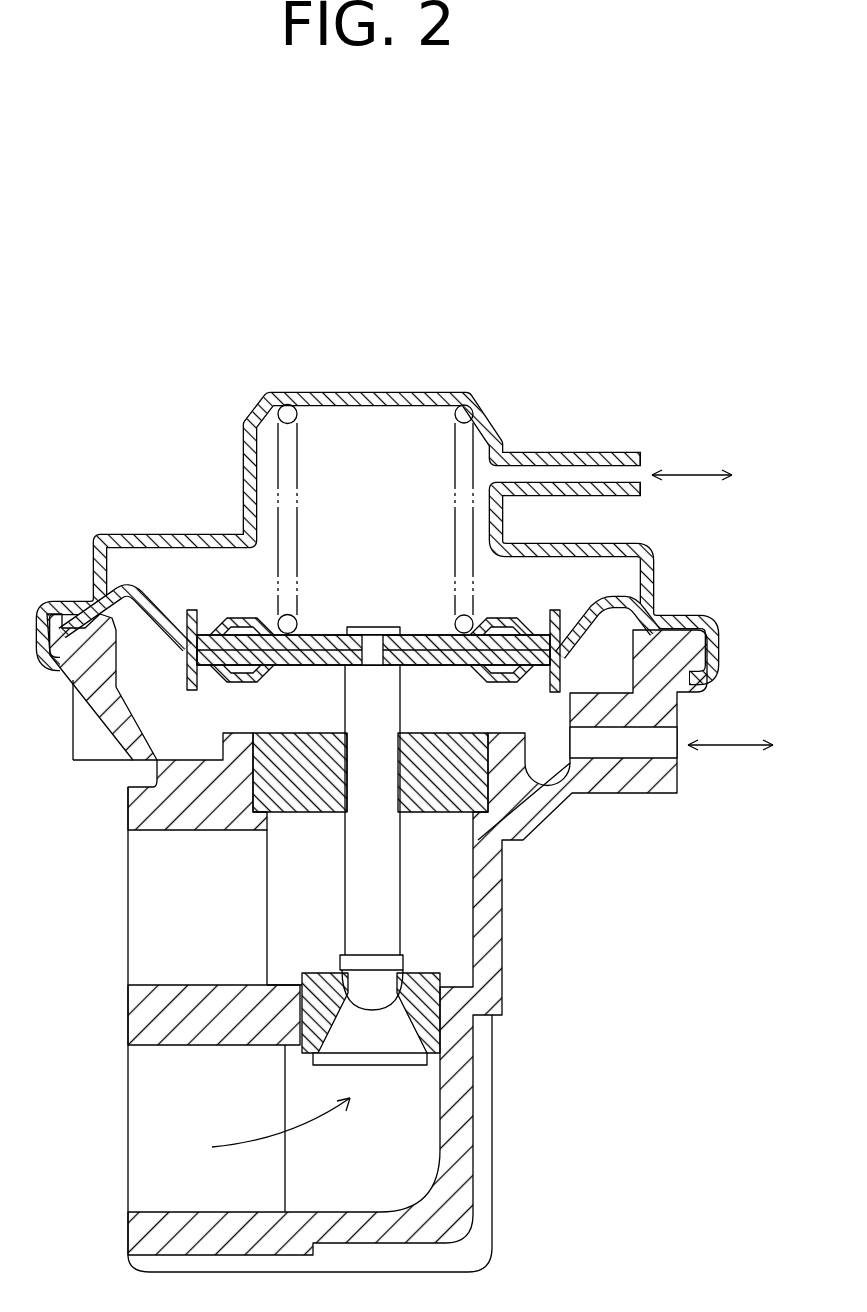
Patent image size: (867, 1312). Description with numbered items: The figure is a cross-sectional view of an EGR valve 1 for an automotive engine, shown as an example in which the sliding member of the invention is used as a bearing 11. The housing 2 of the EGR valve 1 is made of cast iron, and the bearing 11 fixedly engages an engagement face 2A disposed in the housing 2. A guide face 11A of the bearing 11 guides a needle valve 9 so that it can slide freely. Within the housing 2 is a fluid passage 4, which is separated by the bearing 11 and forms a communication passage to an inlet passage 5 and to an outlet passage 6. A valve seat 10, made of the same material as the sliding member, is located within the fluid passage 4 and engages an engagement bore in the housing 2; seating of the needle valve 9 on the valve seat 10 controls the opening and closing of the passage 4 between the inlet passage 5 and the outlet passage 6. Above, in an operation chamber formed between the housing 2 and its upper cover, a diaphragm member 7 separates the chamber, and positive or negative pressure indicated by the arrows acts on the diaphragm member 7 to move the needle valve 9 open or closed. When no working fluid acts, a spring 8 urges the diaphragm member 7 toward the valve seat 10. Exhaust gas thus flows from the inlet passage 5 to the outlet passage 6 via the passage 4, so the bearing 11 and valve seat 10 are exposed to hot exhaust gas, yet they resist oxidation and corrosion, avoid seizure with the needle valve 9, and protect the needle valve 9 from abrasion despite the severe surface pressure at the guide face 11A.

The EGR valve 1 is at (570, 397).
The housing 2 is at (490, 926).
The engagement face 2A is at (478, 776).
The fluid passage 4 is at (452, 957).
The inlet passage 5 is at (173, 1210).
The outlet passage 6 is at (173, 985).
The diaphragm member 7 is at (638, 557).
The spring 8 is at (298, 455).
The needle valve 9 is at (383, 882).
The valve seat 10 is at (433, 1025).
The bearing 11 is at (293, 783).
The guide face 11A is at (345, 783).